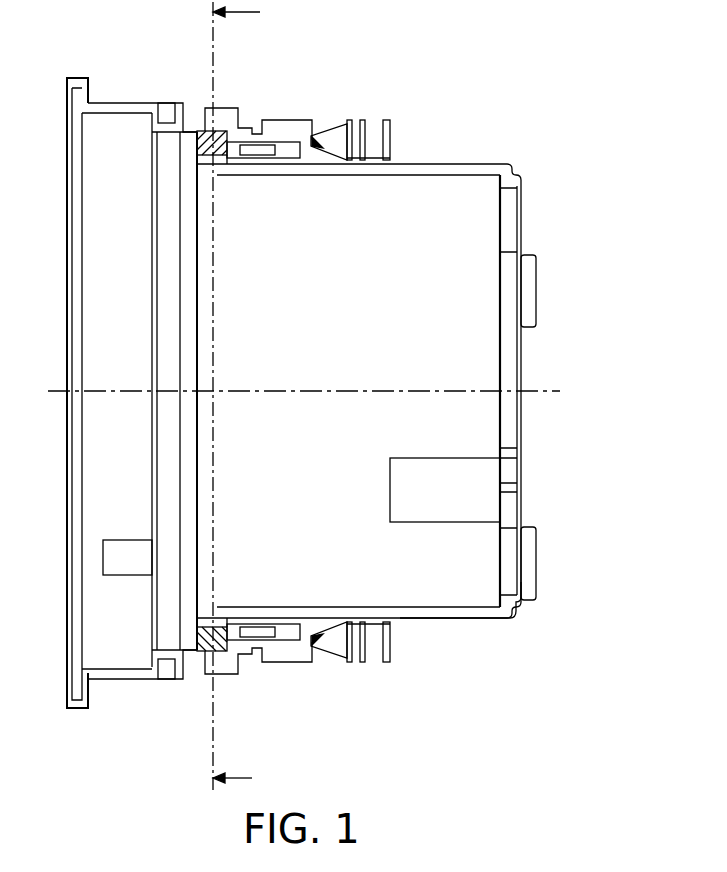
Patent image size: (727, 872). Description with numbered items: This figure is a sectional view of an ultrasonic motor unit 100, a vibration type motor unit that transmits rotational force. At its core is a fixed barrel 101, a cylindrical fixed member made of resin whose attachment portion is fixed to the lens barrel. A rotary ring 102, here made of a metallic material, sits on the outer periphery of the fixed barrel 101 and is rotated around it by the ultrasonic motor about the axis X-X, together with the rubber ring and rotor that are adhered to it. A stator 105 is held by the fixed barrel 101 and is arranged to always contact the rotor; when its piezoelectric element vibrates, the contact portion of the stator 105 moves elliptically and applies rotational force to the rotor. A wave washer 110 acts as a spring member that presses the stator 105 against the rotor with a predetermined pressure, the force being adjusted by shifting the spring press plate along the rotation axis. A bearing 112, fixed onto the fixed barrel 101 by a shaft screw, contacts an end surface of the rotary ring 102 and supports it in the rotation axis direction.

The ultrasonic motor unit 100 is at (580, 44).
The fixed barrel 101 is at (437, 163).
The rotary ring 102 is at (226, 108).
The stator 105 is at (315, 137).
The wave washer 110 is at (370, 640).
The bearing 112 is at (205, 128).